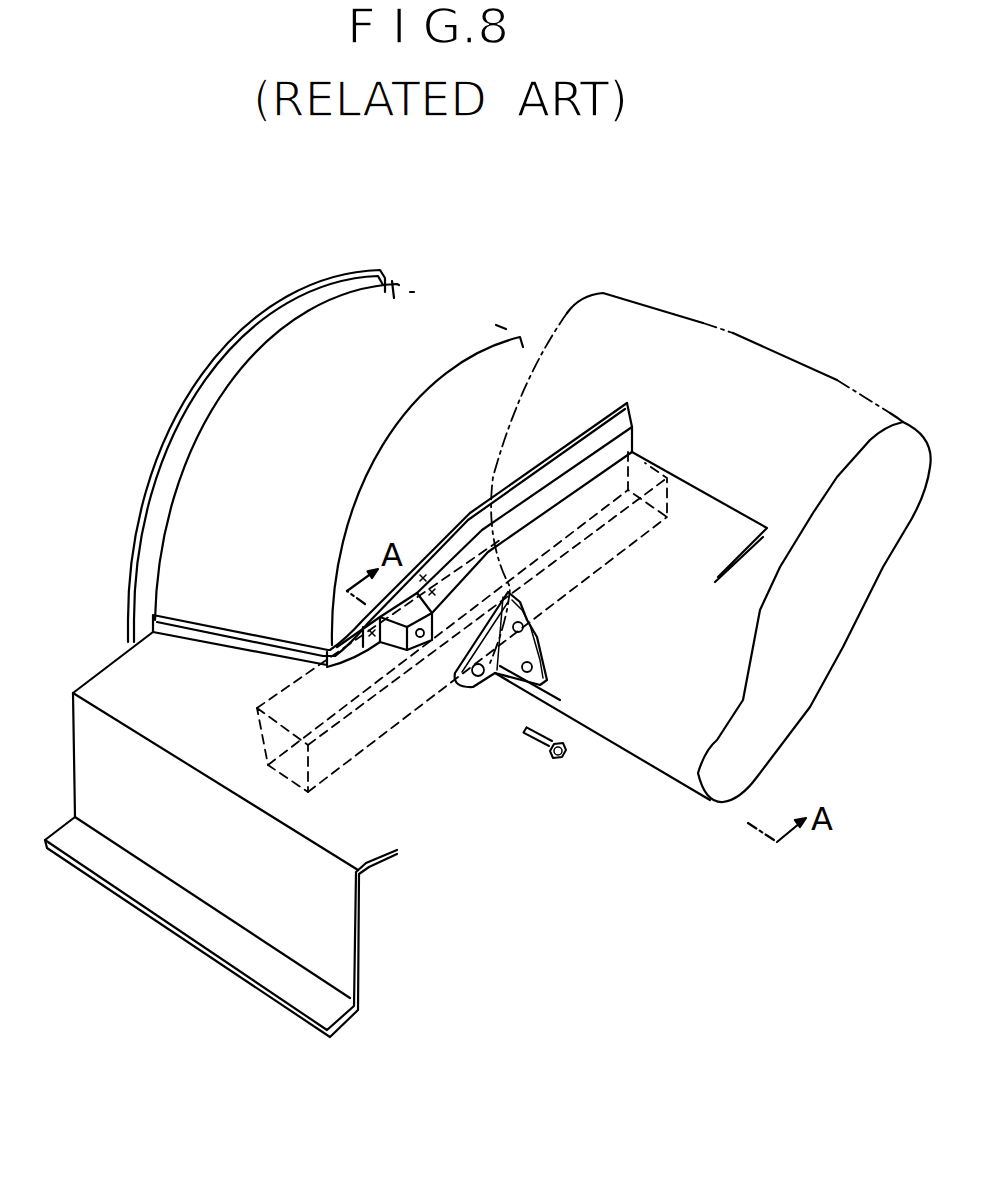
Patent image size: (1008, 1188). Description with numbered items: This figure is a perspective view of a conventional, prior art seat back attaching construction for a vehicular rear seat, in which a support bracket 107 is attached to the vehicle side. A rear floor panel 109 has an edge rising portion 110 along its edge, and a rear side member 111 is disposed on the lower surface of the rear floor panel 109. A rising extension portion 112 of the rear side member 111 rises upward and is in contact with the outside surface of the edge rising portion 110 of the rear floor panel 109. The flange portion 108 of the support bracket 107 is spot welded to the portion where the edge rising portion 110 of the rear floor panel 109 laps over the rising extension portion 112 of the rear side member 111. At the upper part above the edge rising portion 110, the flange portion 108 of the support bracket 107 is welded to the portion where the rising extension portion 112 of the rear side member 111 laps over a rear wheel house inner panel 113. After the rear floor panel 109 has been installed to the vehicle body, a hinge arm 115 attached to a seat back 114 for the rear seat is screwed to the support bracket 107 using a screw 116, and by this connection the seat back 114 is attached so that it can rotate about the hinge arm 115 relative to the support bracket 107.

The support bracket 107 is at (363, 617).
The flange portion 108 is at (455, 522).
The rear floor panel 109 is at (117, 685).
The edge rising portion 110 is at (633, 437).
The rear side member 111 is at (373, 755).
The rising extension portion 112 is at (585, 443).
The rear wheel house inner panel 113 is at (393, 325).
The seat back 114 is at (805, 387).
The hinge arm 115 is at (500, 640).
The screw 116 is at (568, 757).